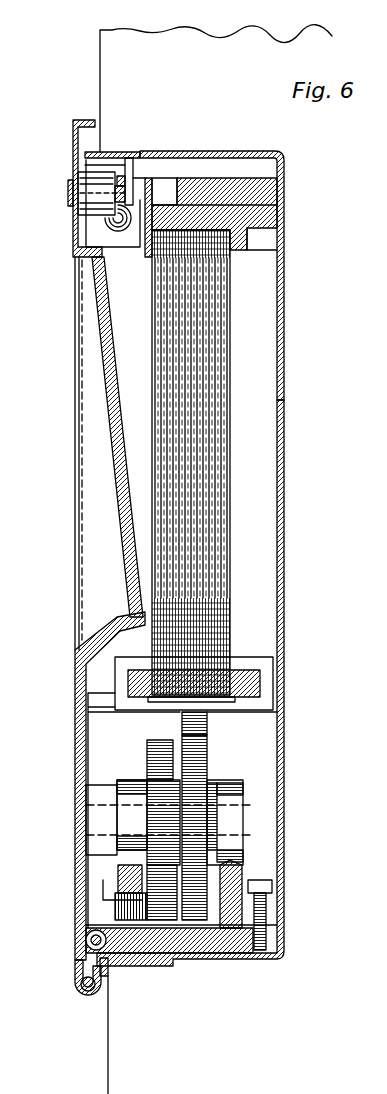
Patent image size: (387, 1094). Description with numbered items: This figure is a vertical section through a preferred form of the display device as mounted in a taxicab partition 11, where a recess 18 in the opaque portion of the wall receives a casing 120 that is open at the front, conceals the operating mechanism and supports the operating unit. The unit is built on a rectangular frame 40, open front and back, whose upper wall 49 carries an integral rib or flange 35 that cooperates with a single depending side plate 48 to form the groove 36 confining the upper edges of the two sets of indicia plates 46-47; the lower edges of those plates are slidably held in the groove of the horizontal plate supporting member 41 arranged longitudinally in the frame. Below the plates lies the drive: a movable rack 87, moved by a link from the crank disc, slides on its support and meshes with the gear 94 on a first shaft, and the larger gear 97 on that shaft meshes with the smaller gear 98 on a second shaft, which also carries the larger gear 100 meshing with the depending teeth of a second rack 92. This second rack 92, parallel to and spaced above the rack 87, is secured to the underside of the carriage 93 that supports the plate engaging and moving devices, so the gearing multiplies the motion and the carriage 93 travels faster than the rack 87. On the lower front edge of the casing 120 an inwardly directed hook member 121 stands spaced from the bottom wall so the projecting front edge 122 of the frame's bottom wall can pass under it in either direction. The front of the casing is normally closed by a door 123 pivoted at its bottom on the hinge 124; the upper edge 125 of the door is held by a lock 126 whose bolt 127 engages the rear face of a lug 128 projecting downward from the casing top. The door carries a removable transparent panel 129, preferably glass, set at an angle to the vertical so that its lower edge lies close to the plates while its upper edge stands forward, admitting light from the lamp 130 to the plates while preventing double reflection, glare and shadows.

The partition 11 is at (116, 1055).
The recess 18 is at (245, 960).
The rib or flange 35 is at (237, 251).
The groove 36 is at (193, 232).
The frame 40 is at (285, 200).
The plate supporting member 41 is at (258, 680).
The sets of plates 46-47 is at (230, 473).
The depending side plate 48 is at (143, 258).
The upper wall 49 is at (212, 186).
The movable rack 87 is at (123, 863).
The second rack 92 is at (208, 726).
The carriage 93 is at (266, 690).
The gear 94 is at (127, 783).
The larger gear 97 is at (162, 742).
The smaller gear 98 is at (170, 817).
The larger gear 100 is at (207, 762).
The casing 120 is at (286, 606).
The hook member 121 is at (87, 942).
The projecting front edge 122 is at (108, 963).
The door 123 is at (78, 740).
The hinge 124 is at (86, 993).
The upper edge 125 is at (75, 124).
The lock 126 is at (68, 195).
The bolt 127 is at (136, 170).
The lug 128 is at (118, 160).
The transparent panel 129 is at (105, 386).
The lamp 130 is at (110, 214).